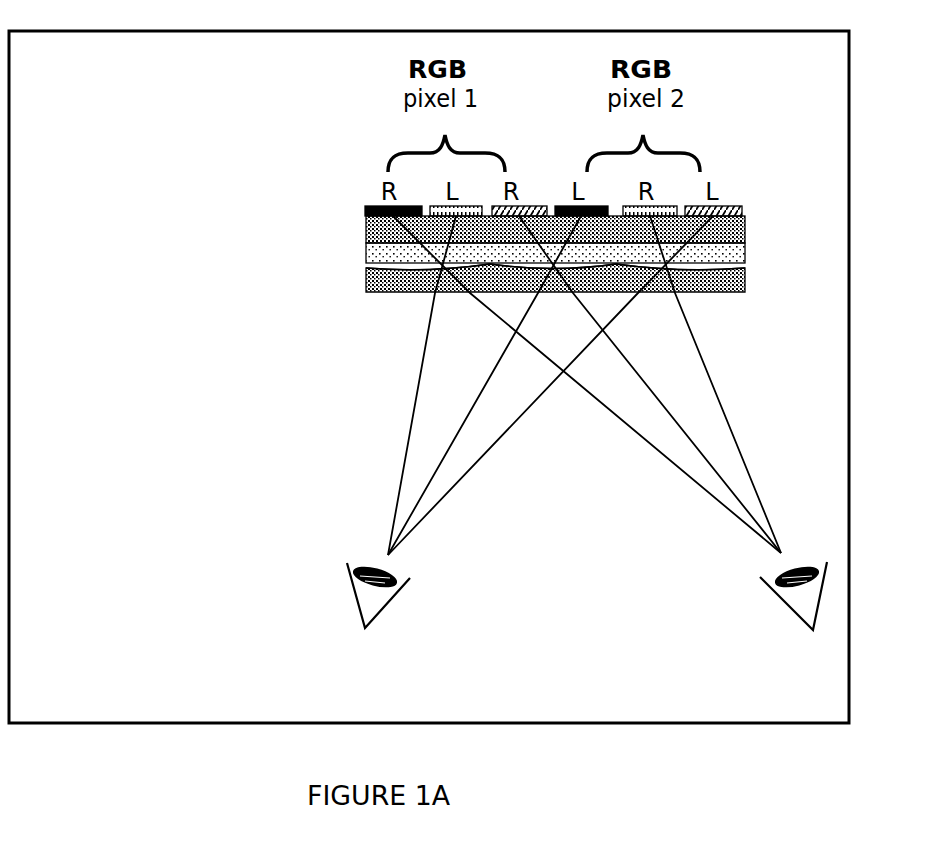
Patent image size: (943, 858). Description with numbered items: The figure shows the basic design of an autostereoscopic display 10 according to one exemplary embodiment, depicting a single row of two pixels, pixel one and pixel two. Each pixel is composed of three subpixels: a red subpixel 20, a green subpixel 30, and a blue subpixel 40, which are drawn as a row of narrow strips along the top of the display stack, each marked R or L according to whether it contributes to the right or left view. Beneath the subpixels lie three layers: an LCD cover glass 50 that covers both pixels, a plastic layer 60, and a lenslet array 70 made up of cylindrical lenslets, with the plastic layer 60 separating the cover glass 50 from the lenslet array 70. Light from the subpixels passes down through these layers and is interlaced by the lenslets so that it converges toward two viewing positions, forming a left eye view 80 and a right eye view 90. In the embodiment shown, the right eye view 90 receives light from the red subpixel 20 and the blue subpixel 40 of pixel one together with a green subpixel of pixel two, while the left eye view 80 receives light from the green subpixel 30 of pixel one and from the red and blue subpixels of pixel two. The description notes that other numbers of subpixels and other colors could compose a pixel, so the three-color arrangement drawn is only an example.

The autostereoscopic display 10 is at (215, 186).
The red subpixel 20 is at (366, 208).
The green subpixel 30 is at (469, 207).
The blue subpixel 40 is at (540, 206).
The LCD cover glass 50 is at (367, 228).
The plastic layer 60 is at (367, 252).
The lenslet array 70 is at (393, 296).
The left eye view 80 is at (360, 615).
The right eye view 90 is at (802, 617).